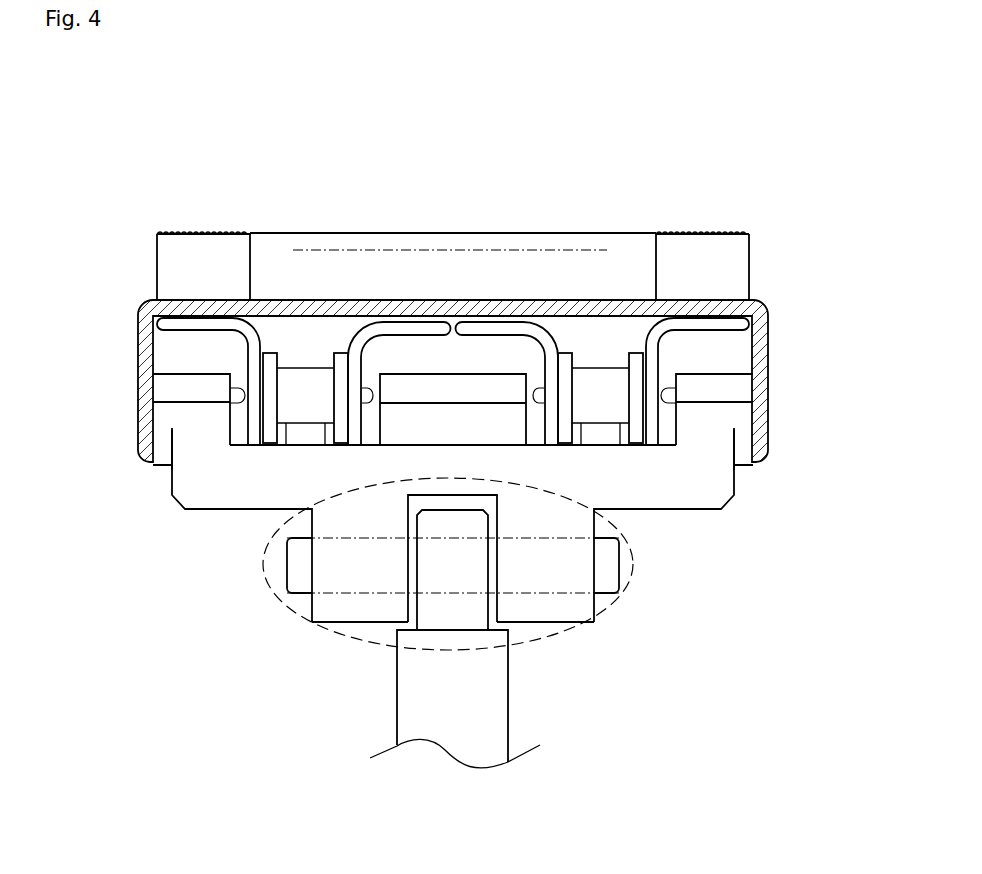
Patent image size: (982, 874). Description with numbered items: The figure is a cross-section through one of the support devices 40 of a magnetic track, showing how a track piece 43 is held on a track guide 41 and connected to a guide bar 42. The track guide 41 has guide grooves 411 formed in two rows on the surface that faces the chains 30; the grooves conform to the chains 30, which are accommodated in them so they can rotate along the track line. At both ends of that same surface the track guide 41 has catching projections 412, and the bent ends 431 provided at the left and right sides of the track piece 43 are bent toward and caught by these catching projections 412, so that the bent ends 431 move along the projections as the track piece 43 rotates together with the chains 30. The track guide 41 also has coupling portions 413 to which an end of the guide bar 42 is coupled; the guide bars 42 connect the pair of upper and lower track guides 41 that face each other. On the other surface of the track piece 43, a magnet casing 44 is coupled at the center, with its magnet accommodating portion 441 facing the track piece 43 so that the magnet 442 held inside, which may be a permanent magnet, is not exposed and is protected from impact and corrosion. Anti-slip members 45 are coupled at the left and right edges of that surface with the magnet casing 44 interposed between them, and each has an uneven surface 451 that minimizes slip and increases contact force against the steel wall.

The support device 40 is at (565, 175).
The chain 30 is at (307, 392).
The track guide 41 is at (200, 492).
The guide groove 411 is at (240, 440).
The catching projection 412 is at (160, 462).
The coupling portion 413 is at (575, 628).
The guide bar 42 is at (408, 703).
The track piece 43 is at (762, 332).
The bent end 431 is at (165, 468).
The magnet casing 44 is at (279, 245).
The magnet accommodating portion 441 is at (297, 318).
The magnet 442 is at (407, 245).
The anti-slip member 45 is at (170, 267).
The uneven surface 451 is at (203, 232).